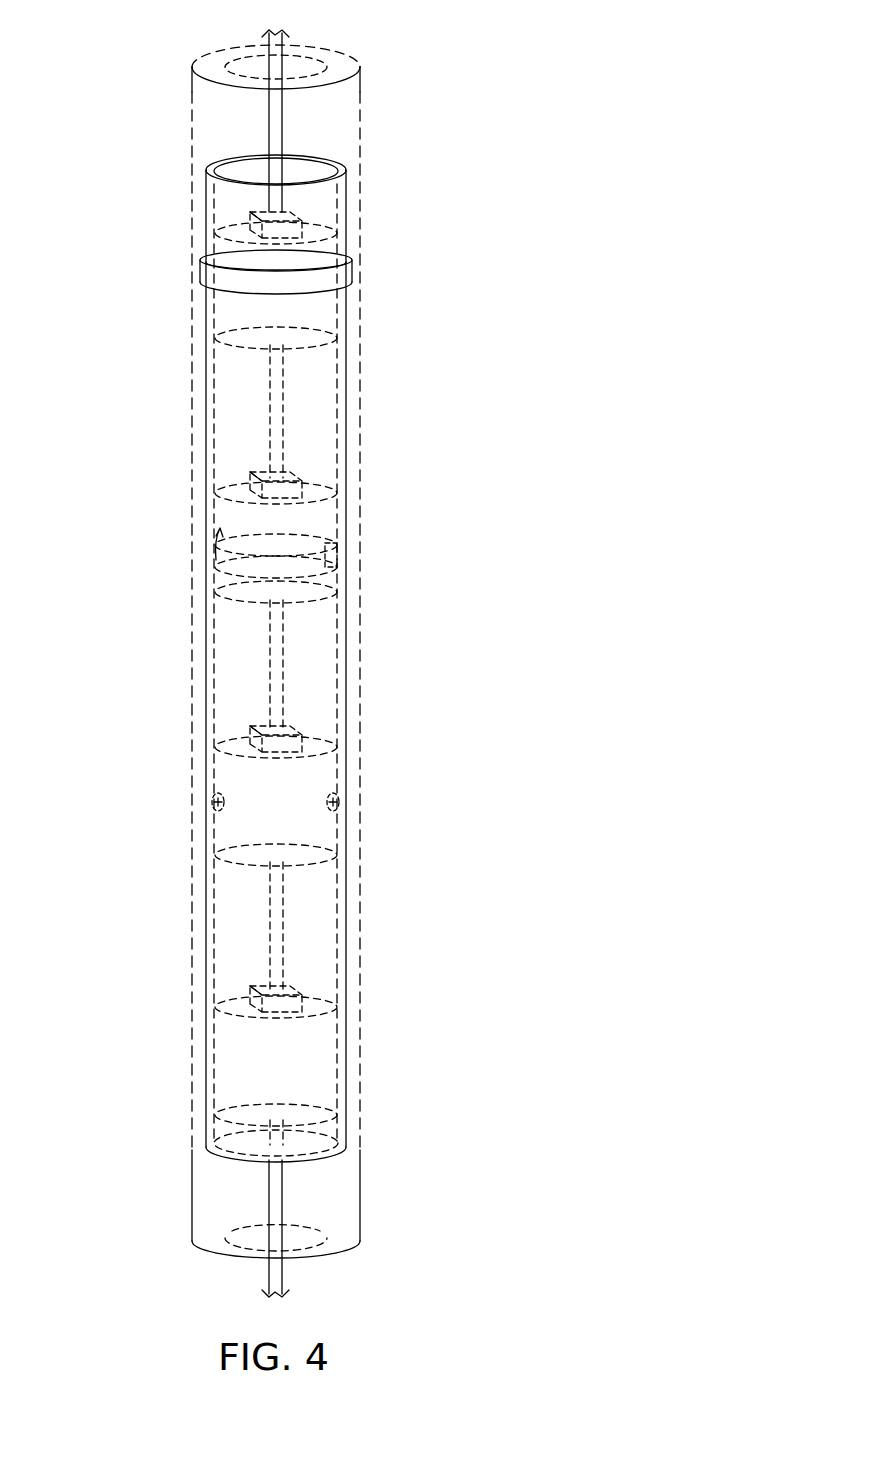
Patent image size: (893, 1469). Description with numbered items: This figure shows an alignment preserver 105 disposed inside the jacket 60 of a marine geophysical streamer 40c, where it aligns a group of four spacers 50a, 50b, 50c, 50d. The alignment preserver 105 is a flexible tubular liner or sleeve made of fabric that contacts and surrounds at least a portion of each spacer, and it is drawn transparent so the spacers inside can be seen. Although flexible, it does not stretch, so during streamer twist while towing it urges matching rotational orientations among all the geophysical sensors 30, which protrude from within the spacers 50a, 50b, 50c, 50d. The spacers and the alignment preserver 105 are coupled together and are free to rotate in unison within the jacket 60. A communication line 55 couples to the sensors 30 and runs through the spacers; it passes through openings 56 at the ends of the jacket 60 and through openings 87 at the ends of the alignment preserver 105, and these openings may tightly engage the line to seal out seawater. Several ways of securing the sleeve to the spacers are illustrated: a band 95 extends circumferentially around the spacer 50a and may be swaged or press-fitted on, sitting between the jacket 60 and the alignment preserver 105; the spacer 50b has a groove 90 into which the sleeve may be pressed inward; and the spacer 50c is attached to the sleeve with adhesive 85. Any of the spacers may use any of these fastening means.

The streamer 40c is at (450, 100).
The jacket 60 is at (192, 90).
The openings 56 is at (248, 78).
The openings 87 is at (307, 182).
The alignment preserver 105 is at (206, 388).
The band 95 is at (350, 262).
The geophysical sensors 30 is at (252, 214).
The communication line 55 is at (285, 432).
The spacer 50a is at (235, 312).
The spacer 50b is at (235, 572).
The groove 90 is at (302, 562).
The spacer 50c is at (235, 830).
The adhesive 85 is at (216, 802).
The spacer 50d is at (235, 1054).